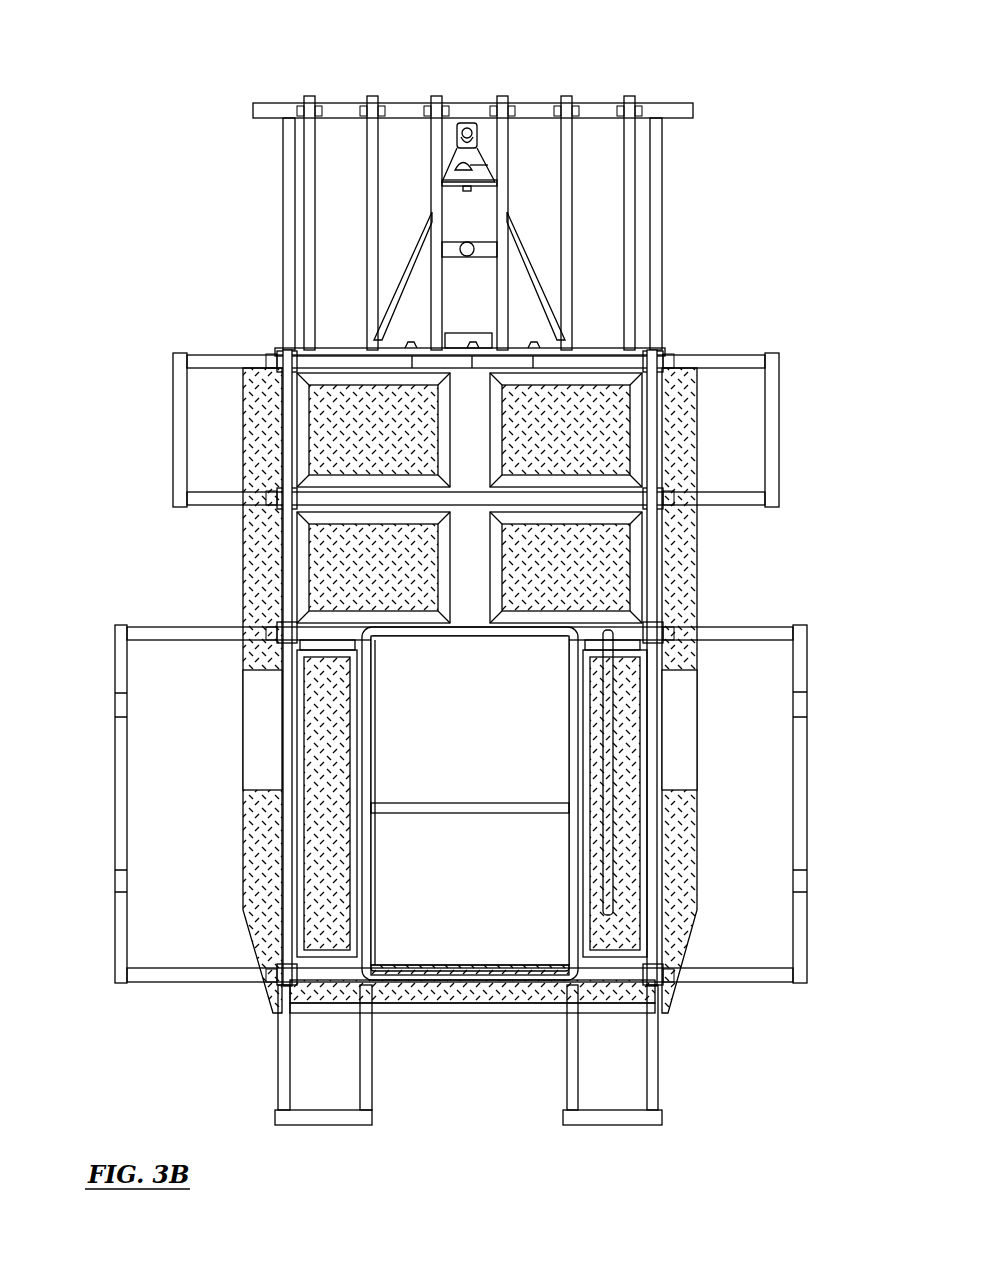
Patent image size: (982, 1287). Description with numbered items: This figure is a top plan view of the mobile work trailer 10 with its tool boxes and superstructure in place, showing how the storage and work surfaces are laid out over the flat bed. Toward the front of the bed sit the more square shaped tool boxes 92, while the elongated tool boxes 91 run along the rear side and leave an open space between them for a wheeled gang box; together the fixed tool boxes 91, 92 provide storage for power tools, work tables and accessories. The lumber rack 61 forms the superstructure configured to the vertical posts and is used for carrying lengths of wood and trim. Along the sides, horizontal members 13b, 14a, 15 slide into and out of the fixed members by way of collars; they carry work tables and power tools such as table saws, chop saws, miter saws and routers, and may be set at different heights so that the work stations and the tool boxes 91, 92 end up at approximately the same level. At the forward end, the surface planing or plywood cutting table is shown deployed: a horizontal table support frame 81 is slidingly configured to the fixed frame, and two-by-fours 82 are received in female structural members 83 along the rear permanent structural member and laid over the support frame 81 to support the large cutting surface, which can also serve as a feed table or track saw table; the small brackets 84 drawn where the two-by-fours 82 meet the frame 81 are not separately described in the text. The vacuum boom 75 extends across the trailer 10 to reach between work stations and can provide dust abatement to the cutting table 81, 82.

The mobile work trailer 10 is at (108, 342).
The horizontal member 13b is at (776, 452).
The horizontal member 14a is at (120, 808).
The horizontal member 15 is at (372, 1113).
The lumber rack 61 is at (650, 553).
The vacuum boom 75 is at (612, 698).
The horizontal table support frame 81 is at (690, 103).
The two-by-four 82 is at (308, 160).
The female structural member 83 is at (283, 344).
The rail bracket 84 is at (298, 104).
The elongated tool box 91 is at (347, 781).
The square shaped tool box 92 is at (586, 577).